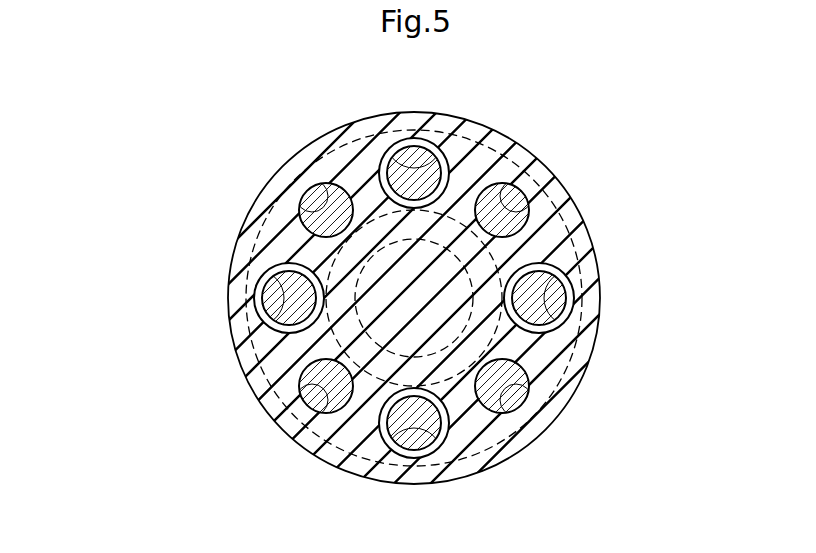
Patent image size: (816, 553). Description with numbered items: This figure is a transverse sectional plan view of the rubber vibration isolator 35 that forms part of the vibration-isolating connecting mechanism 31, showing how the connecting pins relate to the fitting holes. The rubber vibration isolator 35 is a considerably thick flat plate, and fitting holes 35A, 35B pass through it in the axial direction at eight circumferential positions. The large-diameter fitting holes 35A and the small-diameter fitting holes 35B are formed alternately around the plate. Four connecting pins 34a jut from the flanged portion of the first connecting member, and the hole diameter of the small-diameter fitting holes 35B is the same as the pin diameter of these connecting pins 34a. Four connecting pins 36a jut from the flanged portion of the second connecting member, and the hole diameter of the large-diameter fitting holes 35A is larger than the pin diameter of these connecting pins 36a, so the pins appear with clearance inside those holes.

The vibration-isolating connecting mechanism 31 is at (183, 220).
The rubber vibration isolator 35 is at (590, 232).
The large-diameter fitting holes 35A is at (384, 155).
The small-diameter fitting holes 35B is at (300, 205).
The connecting pins 34a is at (333, 189).
The connecting pins 36a is at (442, 160).